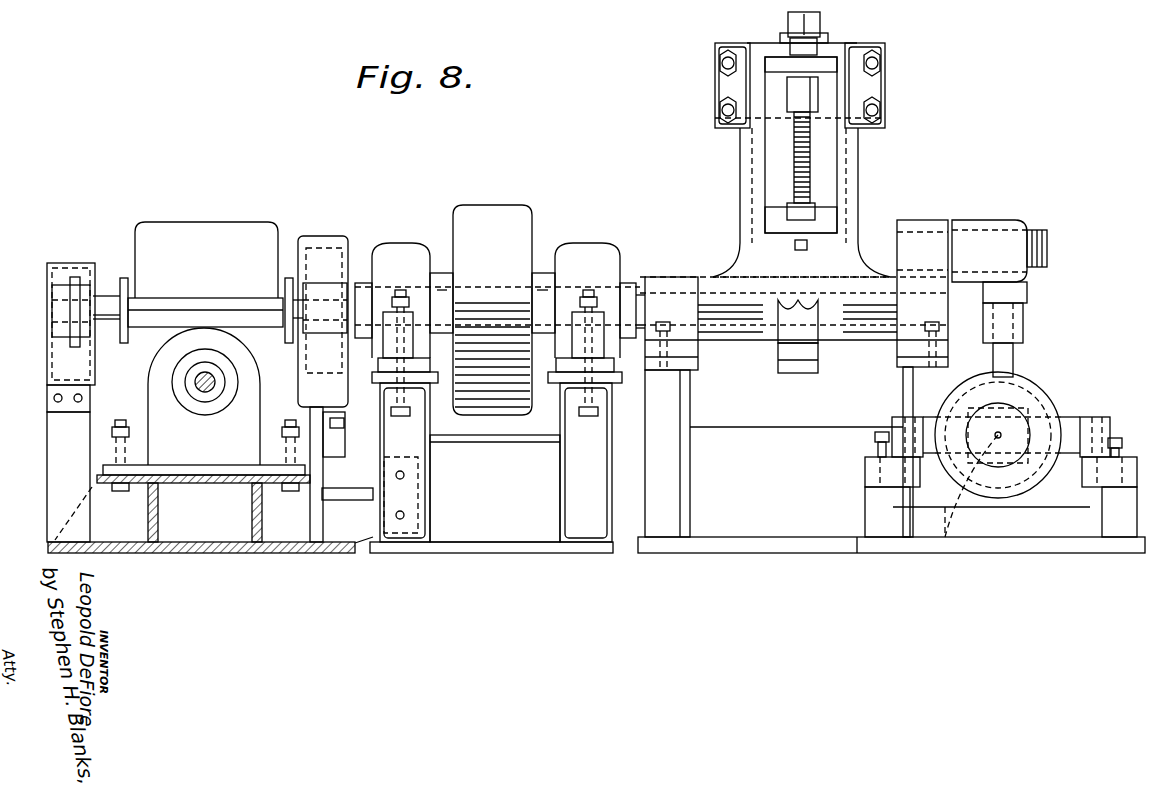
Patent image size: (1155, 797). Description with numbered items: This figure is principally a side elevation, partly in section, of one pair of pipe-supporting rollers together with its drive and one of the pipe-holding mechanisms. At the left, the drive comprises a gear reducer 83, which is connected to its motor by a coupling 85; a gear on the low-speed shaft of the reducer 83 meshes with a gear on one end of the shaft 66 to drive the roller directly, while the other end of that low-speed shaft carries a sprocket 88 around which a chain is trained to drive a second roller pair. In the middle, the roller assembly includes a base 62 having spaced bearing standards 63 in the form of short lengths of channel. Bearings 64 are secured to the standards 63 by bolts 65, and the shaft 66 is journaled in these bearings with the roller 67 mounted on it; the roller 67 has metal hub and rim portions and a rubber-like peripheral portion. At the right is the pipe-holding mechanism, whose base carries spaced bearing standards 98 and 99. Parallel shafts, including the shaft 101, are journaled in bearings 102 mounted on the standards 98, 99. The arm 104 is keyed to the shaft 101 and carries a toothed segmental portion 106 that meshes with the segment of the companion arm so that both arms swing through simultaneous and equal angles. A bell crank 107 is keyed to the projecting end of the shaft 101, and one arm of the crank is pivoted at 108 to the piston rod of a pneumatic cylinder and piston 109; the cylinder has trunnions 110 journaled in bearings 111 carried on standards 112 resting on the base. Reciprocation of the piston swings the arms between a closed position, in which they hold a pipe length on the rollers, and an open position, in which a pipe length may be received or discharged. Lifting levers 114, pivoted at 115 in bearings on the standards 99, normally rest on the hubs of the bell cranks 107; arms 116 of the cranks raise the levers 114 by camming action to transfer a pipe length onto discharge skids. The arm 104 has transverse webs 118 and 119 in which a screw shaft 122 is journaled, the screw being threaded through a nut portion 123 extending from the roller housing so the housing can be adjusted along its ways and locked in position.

The base 62 is at (503, 548).
The bearing standards 63 is at (558, 465).
The bearings 64 is at (393, 255).
The bolts 65 is at (411, 414).
The shaft 66 is at (495, 290).
The roller 67 is at (478, 215).
The gear reducer 83 is at (185, 238).
The coupling 85 is at (208, 410).
The sprocket 88 is at (78, 282).
The bearing standards 98 is at (670, 391).
The bearing standards 99 is at (903, 378).
The shaft 101 is at (865, 277).
The bearings 102 is at (657, 287).
The arm 104 is at (758, 165).
The toothed segmental portion 106 is at (805, 365).
The bell crank 107 is at (1023, 312).
The pivot 108 is at (1010, 457).
The pneumatic cylinder and piston 109 is at (1032, 387).
The trunnions 110 is at (893, 432).
The bearings 111 is at (893, 423).
The standards 112 is at (907, 502).
The lifting levers 114 is at (1027, 288).
The pivot 115 is at (1047, 248).
The arms 116 is at (1013, 357).
The transverse web 118 is at (818, 70).
The transverse web 119 is at (777, 222).
The screw shaft 122 is at (810, 152).
The nut portion 123 is at (818, 97).